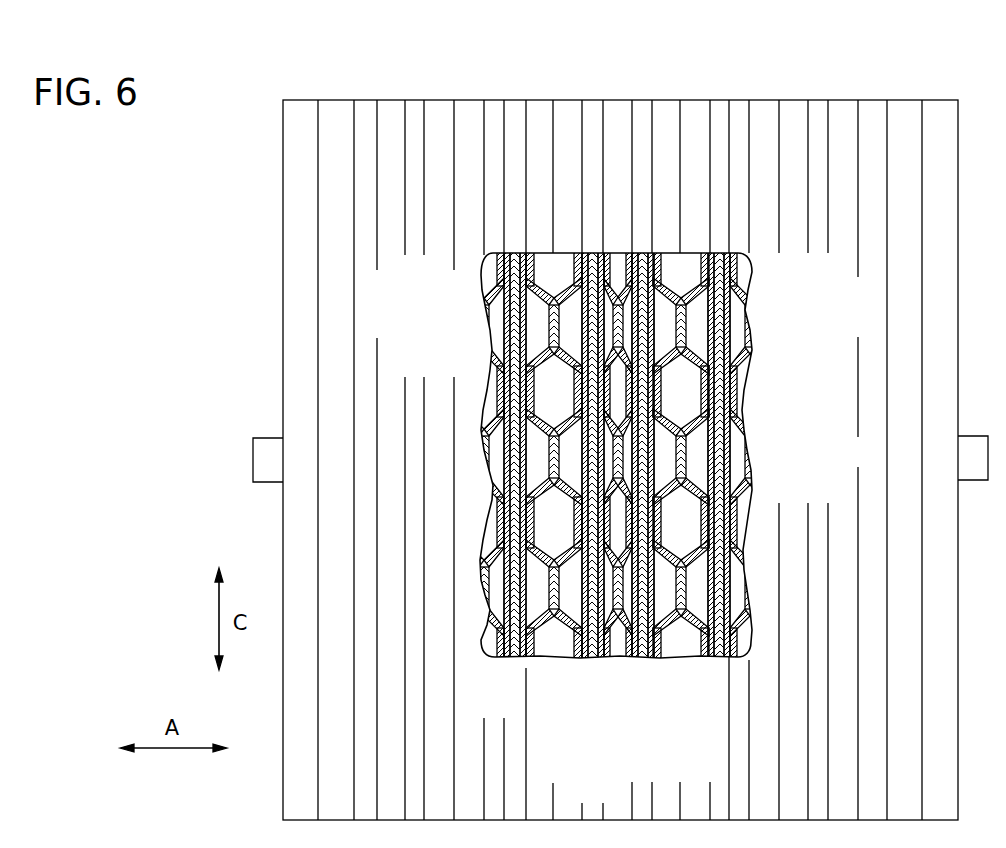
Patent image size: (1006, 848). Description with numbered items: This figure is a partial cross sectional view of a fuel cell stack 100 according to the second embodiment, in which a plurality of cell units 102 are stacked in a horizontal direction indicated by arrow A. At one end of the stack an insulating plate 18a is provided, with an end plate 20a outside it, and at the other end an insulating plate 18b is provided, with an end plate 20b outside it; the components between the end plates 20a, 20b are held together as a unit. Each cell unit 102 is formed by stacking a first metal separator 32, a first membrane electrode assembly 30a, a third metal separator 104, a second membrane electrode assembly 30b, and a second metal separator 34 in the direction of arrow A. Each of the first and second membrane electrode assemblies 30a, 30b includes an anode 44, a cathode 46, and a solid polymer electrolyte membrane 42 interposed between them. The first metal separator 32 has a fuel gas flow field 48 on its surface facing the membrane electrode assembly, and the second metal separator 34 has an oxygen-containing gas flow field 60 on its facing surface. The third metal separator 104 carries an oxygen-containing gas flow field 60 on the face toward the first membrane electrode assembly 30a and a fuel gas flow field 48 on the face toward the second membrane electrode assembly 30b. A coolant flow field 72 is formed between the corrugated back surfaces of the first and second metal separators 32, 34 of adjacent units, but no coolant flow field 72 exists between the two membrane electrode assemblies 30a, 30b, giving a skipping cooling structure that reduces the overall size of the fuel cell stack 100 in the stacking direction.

The fuel cell stack 100 is at (98, 197).
The insulating plate 18a is at (341, 90).
The insulating plate 18b is at (899, 90).
The end plate 20a is at (293, 89).
The end plate 20b is at (947, 89).
The first membrane electrode assembly 30a is at (647, 672).
The second membrane electrode assembly 30b is at (593, 672).
The first metal separator 32 is at (508, 658).
The second metal separator 34 is at (564, 658).
The third metal separator 104 is at (621, 666).
The cell unit 102 is at (710, 756).
The solid polymer electrolyte membrane 42 is at (718, 448).
The anode 44 is at (712, 472).
The cathode 46 is at (733, 432).
The fuel gas flow field 48 is at (617, 328).
The oxygen-containing gas flow field 60 is at (575, 317).
The coolant flow field 72 is at (498, 303).